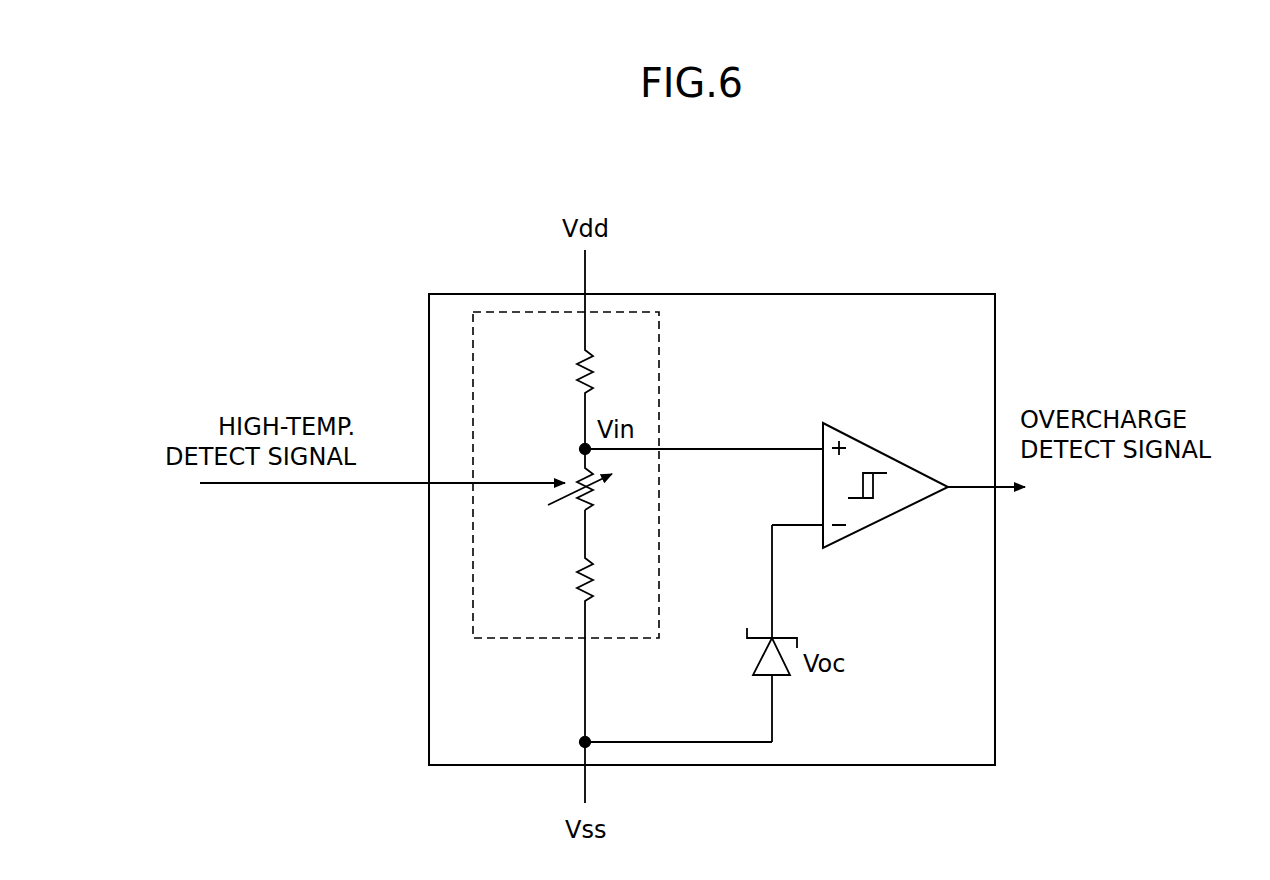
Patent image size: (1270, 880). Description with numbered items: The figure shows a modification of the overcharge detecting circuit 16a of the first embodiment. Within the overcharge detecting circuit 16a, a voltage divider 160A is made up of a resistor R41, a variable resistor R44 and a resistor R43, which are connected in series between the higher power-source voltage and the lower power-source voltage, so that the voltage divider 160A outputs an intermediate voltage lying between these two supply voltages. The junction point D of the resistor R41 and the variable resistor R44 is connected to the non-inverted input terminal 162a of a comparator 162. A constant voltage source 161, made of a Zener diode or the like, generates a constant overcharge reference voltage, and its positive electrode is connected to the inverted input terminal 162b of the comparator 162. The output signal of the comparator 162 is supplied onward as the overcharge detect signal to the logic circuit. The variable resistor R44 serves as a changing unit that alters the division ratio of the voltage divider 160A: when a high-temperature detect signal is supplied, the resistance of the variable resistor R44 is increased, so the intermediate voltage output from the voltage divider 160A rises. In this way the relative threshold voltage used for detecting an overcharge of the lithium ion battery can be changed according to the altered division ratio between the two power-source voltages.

The overcharge detecting circuit 16a is at (878, 294).
The voltage divider 160A is at (638, 312).
The comparator 162 is at (890, 453).
The non-inverted input terminal 162a is at (820, 444).
The inverted input terminal 162b is at (820, 520).
The constant voltage source 161 is at (787, 636).
The resistor R41 is at (554, 370).
The resistor R43 is at (554, 577).
The variable resistor R44 is at (563, 500).
The junction point D is at (578, 447).